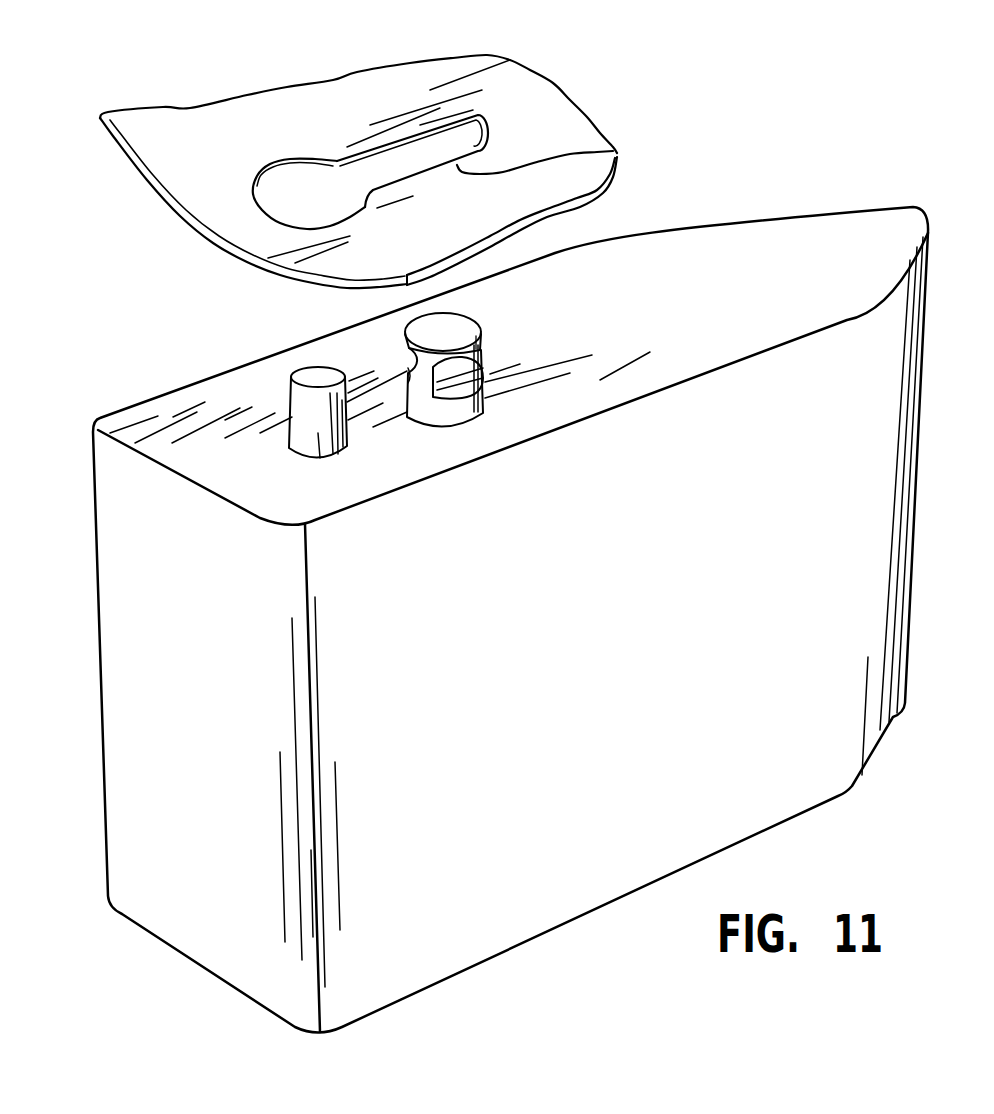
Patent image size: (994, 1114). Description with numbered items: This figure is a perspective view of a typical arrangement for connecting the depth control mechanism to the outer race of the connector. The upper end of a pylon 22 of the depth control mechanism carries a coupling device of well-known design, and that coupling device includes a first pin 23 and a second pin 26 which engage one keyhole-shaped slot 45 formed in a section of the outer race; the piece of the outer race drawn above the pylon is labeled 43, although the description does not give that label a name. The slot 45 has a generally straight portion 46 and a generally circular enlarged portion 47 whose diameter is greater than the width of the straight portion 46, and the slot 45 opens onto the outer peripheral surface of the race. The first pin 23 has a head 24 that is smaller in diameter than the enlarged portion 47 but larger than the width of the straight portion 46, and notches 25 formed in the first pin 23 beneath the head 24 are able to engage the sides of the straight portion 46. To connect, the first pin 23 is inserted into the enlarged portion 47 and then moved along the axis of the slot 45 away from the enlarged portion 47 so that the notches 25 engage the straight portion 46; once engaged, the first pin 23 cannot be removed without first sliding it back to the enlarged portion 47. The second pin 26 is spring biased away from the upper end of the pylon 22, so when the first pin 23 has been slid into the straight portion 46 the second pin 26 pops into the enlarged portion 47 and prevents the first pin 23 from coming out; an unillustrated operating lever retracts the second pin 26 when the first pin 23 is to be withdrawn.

The pylon 22 is at (100, 678).
The first pin 23 is at (448, 417).
The head 24 is at (462, 327).
The notches 25 is at (487, 367).
The second pin 26 is at (303, 455).
The cover plate 43 is at (197, 123).
The keyhole-shaped slot 45 is at (614, 153).
The straight portion 46 is at (408, 157).
The enlarged portion 47 is at (277, 208).